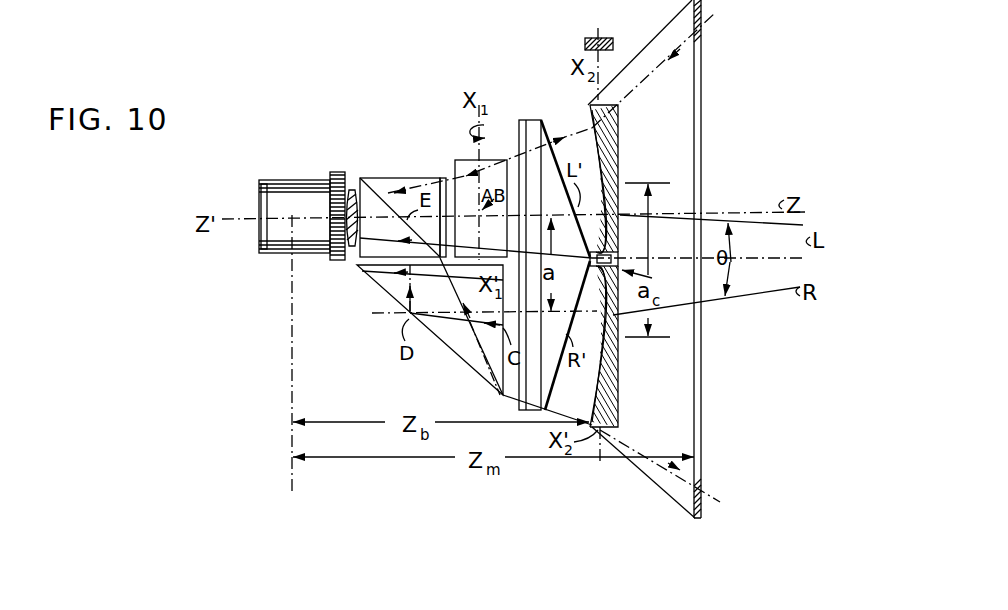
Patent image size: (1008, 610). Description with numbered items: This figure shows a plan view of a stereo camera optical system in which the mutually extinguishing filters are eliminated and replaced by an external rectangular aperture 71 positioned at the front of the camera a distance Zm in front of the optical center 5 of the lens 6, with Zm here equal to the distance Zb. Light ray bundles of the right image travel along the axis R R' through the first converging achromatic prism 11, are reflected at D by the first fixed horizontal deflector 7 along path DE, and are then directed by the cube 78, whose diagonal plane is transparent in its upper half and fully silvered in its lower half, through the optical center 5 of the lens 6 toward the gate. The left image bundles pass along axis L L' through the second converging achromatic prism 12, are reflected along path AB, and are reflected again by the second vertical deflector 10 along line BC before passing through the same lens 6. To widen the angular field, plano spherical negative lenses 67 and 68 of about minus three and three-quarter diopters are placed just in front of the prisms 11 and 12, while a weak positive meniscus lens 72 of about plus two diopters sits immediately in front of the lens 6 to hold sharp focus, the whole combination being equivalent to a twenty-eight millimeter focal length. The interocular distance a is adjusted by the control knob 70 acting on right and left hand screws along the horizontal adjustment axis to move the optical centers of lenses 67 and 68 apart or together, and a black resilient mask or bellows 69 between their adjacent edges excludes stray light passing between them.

The optical center 5 is at (285, 223).
The lens 6 is at (290, 183).
The first fixed horizontal deflector 7 is at (443, 302).
The second vertical deflector 10 is at (457, 166).
The first converging achromatic prism 11 is at (549, 375).
The second converging achromatic prism 12 is at (566, 117).
The plano spherical negative lens 67 is at (619, 135).
The plano spherical negative lens 68 is at (620, 405).
The black resilient mask or bellows 69 is at (622, 248).
The control knob 70 is at (615, 42).
The rectangular aperture 71 is at (702, 62).
The weak positive lens 72 is at (349, 190).
The cube 78 is at (406, 186).